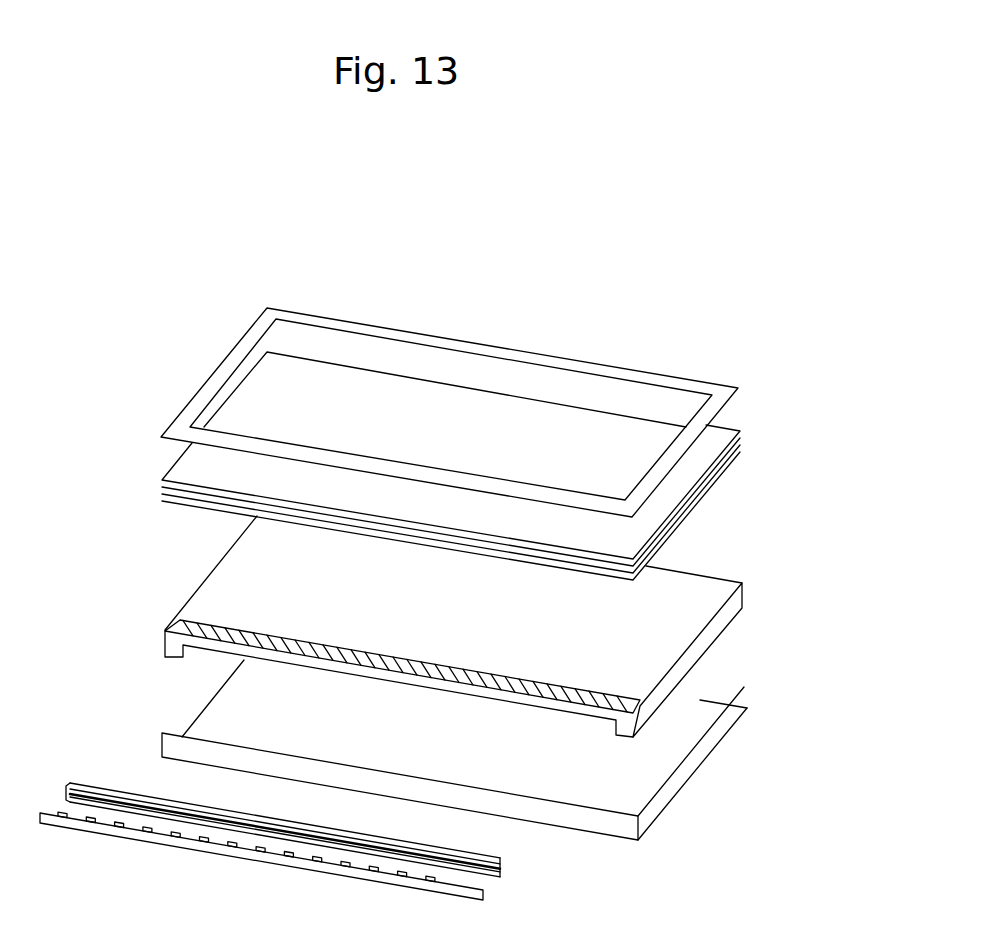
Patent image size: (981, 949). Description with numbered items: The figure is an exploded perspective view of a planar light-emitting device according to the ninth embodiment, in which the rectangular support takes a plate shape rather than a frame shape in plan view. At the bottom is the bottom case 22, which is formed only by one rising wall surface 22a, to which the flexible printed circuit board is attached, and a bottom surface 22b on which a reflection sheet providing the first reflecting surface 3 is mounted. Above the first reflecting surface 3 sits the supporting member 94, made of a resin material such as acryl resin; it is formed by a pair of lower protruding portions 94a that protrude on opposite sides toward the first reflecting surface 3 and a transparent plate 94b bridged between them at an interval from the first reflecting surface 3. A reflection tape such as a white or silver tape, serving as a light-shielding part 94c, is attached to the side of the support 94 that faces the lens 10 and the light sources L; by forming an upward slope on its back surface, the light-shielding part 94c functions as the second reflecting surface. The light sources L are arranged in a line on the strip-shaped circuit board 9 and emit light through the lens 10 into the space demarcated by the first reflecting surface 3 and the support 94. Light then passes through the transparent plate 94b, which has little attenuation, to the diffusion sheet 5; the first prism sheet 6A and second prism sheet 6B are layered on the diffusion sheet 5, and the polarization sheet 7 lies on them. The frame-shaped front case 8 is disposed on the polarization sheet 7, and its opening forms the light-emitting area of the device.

The front case 8 is at (592, 360).
The polarization sheet 7 is at (162, 480).
The second prism sheet 6B is at (162, 487).
The first prism sheet 6A is at (162, 494).
The diffusion sheet 5 is at (162, 501).
The supporting member 94 is at (467, 618).
The lower protruding portions 94a is at (722, 620).
The transparent plate 94b is at (203, 600).
The light-shielding part 94c is at (373, 657).
The bottom case 22 is at (501, 778).
The rising wall surface 22a is at (620, 833).
The bottom surface 22b is at (725, 713).
The first reflecting surface 3 is at (668, 713).
The lens 10 is at (503, 870).
The circuit board 9 is at (288, 876).
The light sources L is at (403, 876).